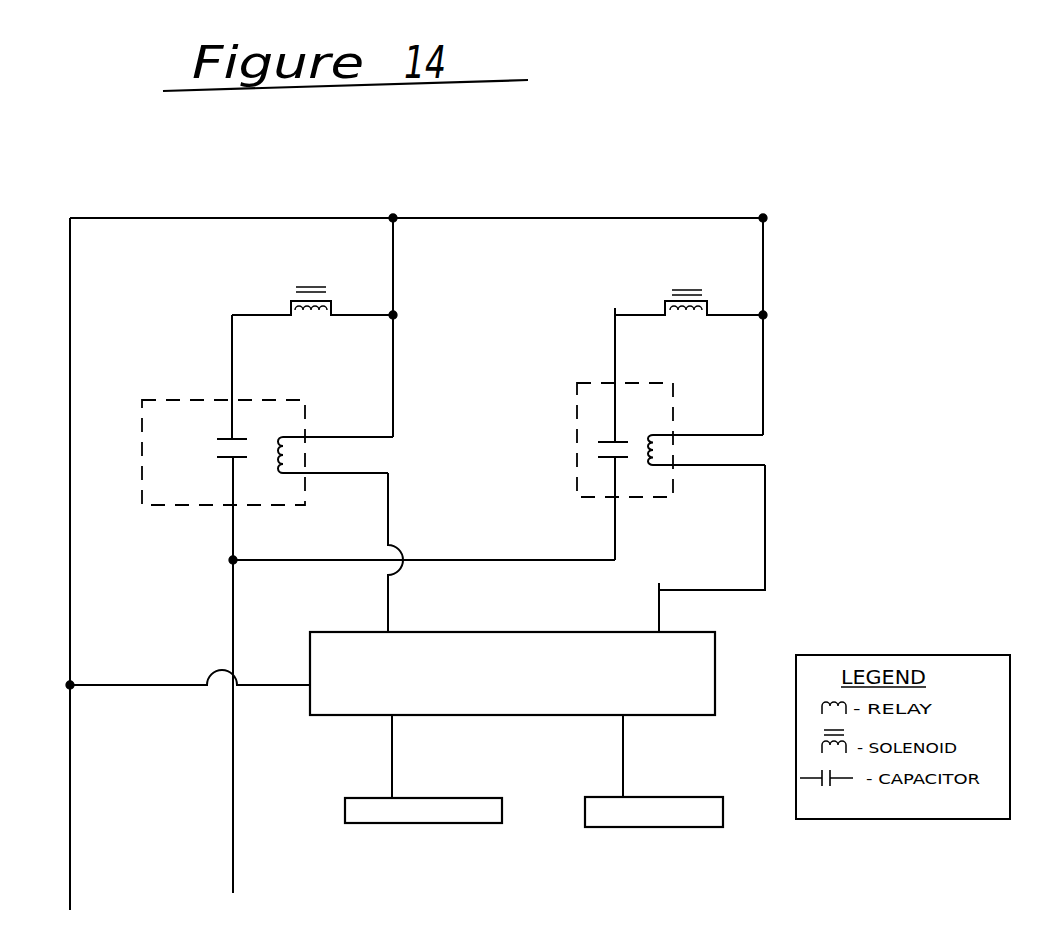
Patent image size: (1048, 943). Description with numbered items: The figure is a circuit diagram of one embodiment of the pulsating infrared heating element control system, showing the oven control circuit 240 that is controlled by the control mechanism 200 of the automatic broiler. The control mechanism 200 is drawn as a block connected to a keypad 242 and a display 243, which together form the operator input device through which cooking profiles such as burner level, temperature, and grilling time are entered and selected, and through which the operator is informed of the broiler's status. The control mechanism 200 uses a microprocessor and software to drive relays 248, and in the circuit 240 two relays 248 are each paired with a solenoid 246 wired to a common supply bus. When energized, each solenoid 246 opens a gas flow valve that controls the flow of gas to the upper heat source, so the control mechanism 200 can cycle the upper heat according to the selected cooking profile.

The oven control circuit 240 is at (848, 507).
The solenoid 246 is at (282, 282).
The relay 248 is at (273, 430).
The control mechanism 200 is at (512, 673).
The keypad 242 is at (398, 868).
The display 243 is at (683, 878).